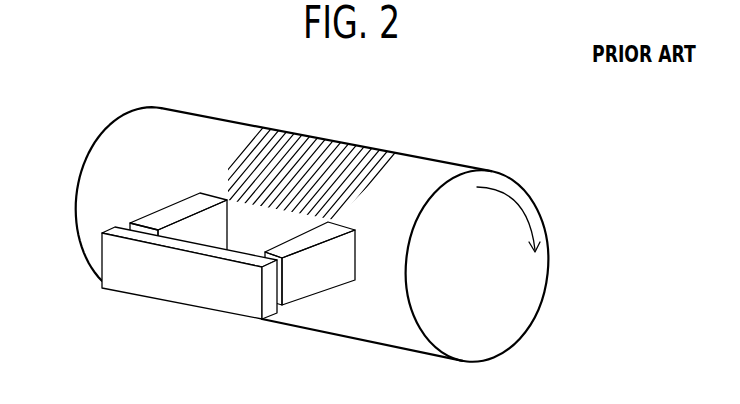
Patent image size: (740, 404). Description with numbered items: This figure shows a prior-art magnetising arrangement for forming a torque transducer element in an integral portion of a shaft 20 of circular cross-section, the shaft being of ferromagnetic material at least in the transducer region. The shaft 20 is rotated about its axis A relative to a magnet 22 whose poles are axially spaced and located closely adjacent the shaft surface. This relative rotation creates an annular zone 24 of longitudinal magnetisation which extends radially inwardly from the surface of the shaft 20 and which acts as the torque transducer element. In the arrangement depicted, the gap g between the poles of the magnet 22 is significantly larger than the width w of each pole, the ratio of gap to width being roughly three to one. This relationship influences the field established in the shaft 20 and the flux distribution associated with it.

The shaft 20 is at (138, 135).
The magnet 22 is at (133, 280).
The annular zone of magnetisation 24 is at (318, 150).
The axis A is at (78, 192).
The gap between the poles g is at (328, 222).
The width of the poles w is at (197, 227).